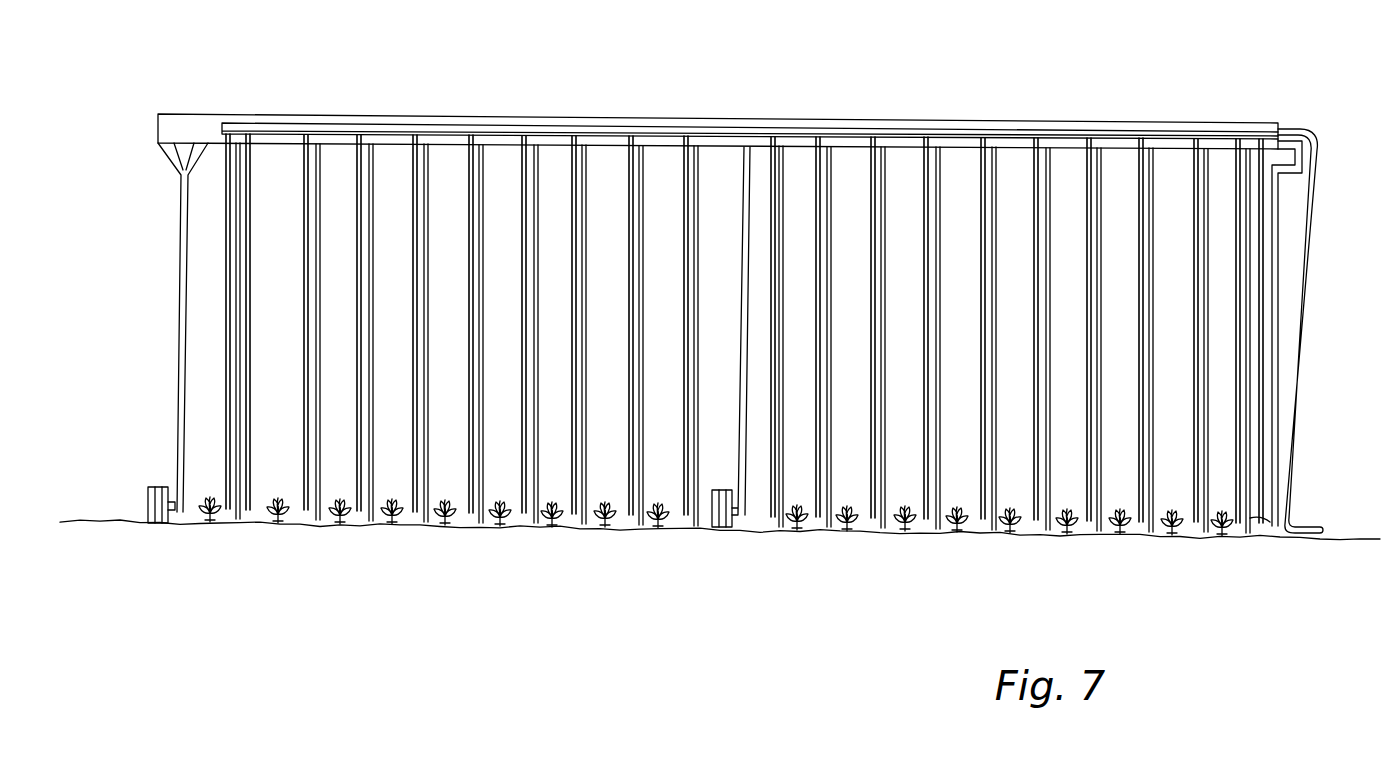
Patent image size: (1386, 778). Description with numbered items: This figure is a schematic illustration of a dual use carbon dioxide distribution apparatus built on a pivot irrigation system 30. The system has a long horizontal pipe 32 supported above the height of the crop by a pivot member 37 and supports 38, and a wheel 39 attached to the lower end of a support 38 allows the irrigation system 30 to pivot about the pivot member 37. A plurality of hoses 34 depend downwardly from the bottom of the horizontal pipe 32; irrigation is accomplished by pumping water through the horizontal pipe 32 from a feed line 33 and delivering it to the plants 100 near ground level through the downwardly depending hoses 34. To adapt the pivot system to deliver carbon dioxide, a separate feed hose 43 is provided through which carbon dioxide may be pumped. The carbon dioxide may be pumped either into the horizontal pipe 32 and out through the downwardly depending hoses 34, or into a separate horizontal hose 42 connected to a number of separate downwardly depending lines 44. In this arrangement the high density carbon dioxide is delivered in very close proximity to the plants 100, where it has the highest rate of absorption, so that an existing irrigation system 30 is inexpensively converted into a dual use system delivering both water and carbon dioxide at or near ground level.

The pivot irrigation system 30 is at (770, 105).
The horizontal pipe 32 is at (1027, 118).
The separate horizontal hose 42 is at (1163, 133).
The feed hose 43 is at (1298, 130).
The feed line 33 is at (1277, 212).
The hoses 34 is at (238, 420).
The downwardly depending lines 44 is at (249, 512).
The supports 38 is at (180, 500).
The wheel 39 is at (162, 510).
The pivot member 37 is at (1250, 518).
The plants 100 is at (508, 530).